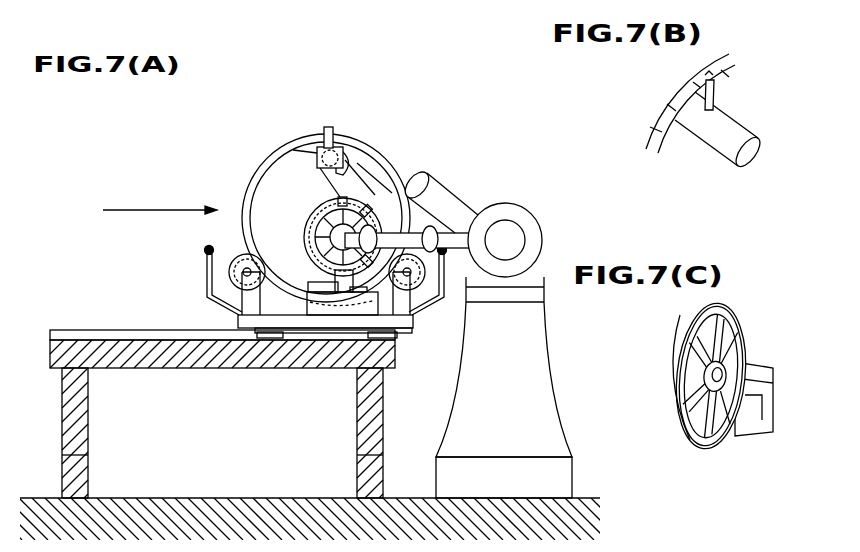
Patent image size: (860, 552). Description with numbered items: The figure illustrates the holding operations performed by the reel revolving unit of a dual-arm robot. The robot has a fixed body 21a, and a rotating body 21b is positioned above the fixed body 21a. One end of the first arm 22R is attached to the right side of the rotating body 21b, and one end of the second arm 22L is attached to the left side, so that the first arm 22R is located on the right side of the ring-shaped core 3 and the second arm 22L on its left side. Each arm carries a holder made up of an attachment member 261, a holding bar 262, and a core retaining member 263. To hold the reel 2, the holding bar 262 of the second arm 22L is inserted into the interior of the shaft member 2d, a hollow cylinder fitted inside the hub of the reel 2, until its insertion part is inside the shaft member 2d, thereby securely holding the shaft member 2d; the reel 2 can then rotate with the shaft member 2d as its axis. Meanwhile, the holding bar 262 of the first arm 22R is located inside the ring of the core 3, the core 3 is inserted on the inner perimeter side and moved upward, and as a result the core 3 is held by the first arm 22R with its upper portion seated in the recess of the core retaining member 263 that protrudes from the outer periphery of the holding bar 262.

In FIG. 7A, the reel 2 is at (320, 218).
In FIG. 7C, the reel 2 is at (724, 310).
In FIG. 7C, the shaft member 2d is at (728, 405).
In FIG. 7A, the core 3 is at (275, 157).
In FIG. 7B, the core 3 is at (663, 112).
In FIG. 7A, the fixed body 21a is at (530, 326).
In FIG. 7A, the rotating body 21b is at (532, 210).
In FIG. 7A, the second arm 22L is at (437, 228).
In FIG. 7A, the first arm 22R is at (400, 173).
In FIG. 7A, the attachment member 261 is at (348, 150).
In FIG. 7A, the holding bar 262 is at (317, 138).
In FIG. 7B, the holding bar 262 is at (703, 135).
In FIG. 7C, the holding bar 262 is at (742, 360).
In FIG. 7A, the core retaining member 263 is at (335, 130).
In FIG. 7B, the core retaining member 263 is at (718, 100).